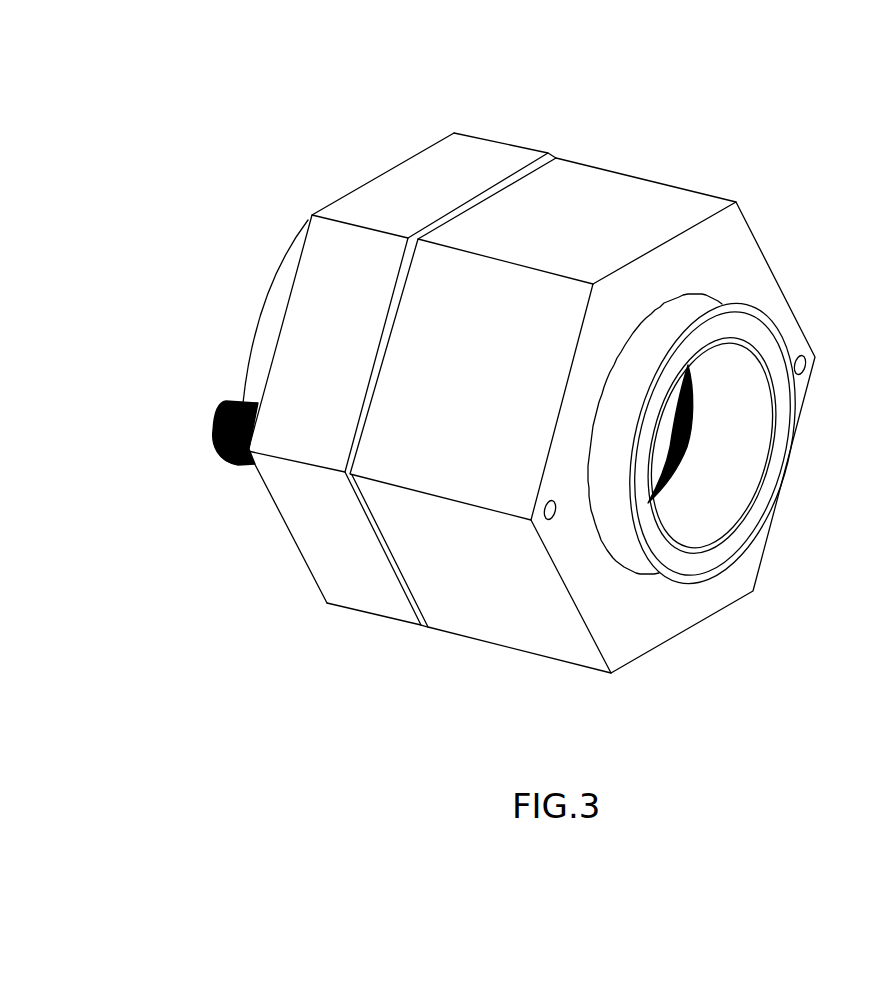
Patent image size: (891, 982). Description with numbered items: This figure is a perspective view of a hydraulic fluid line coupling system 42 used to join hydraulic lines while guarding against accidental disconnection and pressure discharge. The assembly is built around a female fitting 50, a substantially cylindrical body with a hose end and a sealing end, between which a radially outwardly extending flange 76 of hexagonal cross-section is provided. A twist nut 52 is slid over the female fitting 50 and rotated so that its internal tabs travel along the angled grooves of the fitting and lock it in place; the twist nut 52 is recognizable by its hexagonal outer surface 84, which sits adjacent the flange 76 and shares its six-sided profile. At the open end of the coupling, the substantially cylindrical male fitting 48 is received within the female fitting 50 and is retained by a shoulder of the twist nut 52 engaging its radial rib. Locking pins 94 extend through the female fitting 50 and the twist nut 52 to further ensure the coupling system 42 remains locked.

The hydraulic fluid line coupling system 42 is at (677, 141).
The male fitting 48 is at (757, 325).
The female fitting 50 is at (503, 143).
The twist nut 52 is at (737, 201).
The flange 76 is at (327, 245).
The hexagonal outer surface 84 is at (477, 381).
The locking pins 94 is at (213, 447).